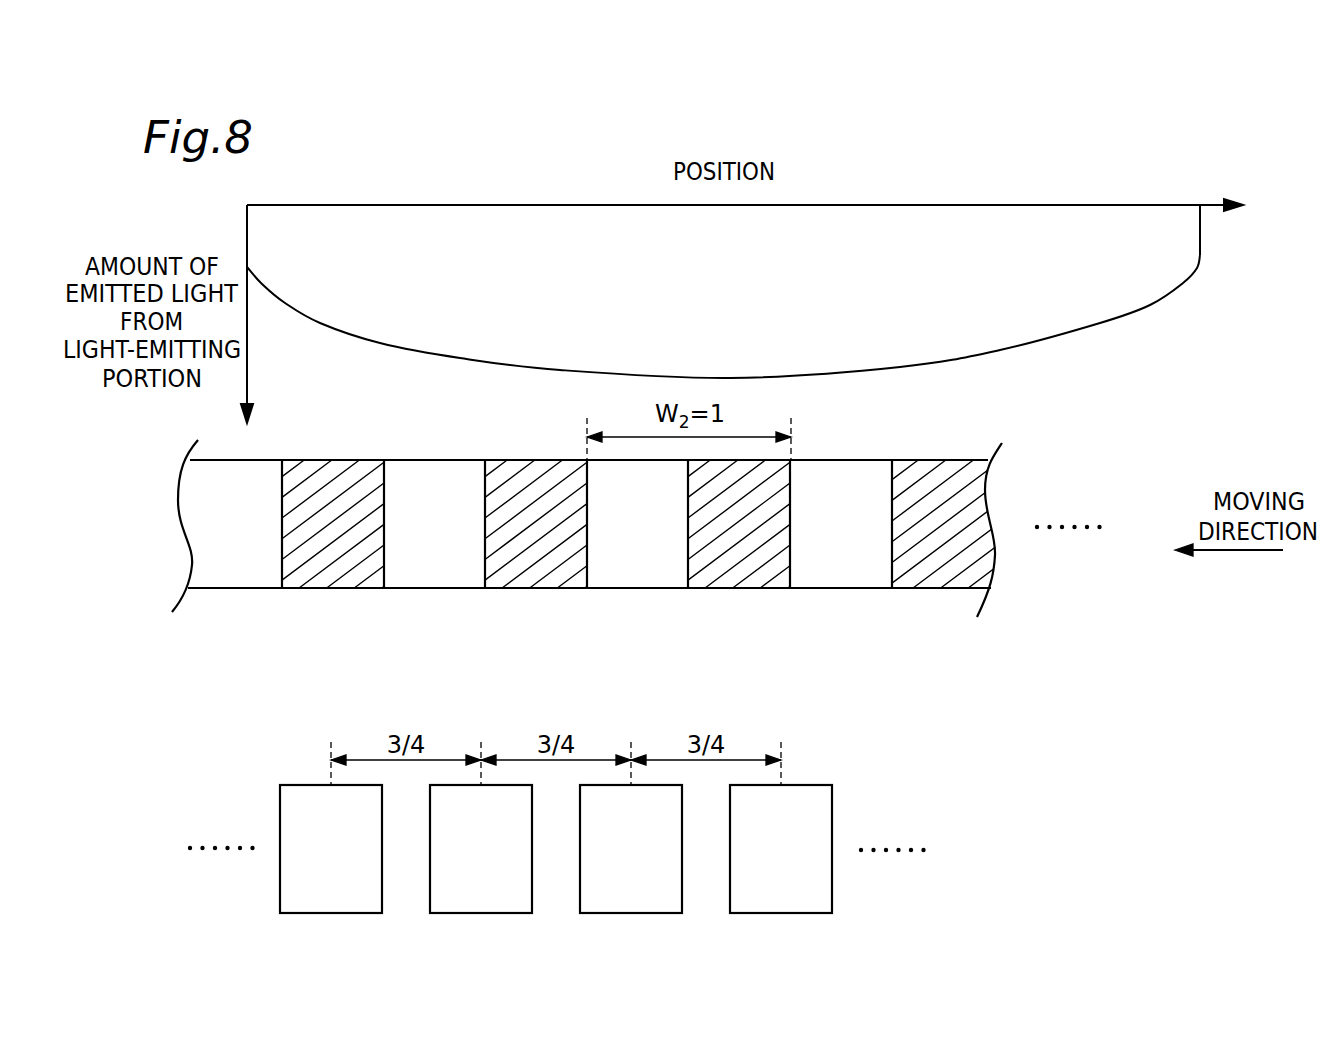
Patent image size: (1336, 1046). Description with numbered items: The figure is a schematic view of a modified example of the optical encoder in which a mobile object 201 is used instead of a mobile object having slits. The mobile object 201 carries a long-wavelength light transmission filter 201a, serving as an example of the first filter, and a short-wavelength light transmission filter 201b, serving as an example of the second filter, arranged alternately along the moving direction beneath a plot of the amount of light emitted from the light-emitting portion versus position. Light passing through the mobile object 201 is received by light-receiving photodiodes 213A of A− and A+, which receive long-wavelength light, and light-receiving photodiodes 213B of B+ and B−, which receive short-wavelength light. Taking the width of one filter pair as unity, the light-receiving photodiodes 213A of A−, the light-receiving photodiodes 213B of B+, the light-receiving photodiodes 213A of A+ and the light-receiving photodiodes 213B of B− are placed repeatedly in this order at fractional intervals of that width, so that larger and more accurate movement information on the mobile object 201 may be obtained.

The mobile object 201 is at (590, 494).
The long-wavelength light transmission filter 201a is at (438, 480).
The short-wavelength light transmission filter 201b is at (338, 478).
The light-receiving photodiodes of A− and A+ 213A is at (332, 913).
The light-receiving photodiodes of B+ and B− 213B is at (482, 913).